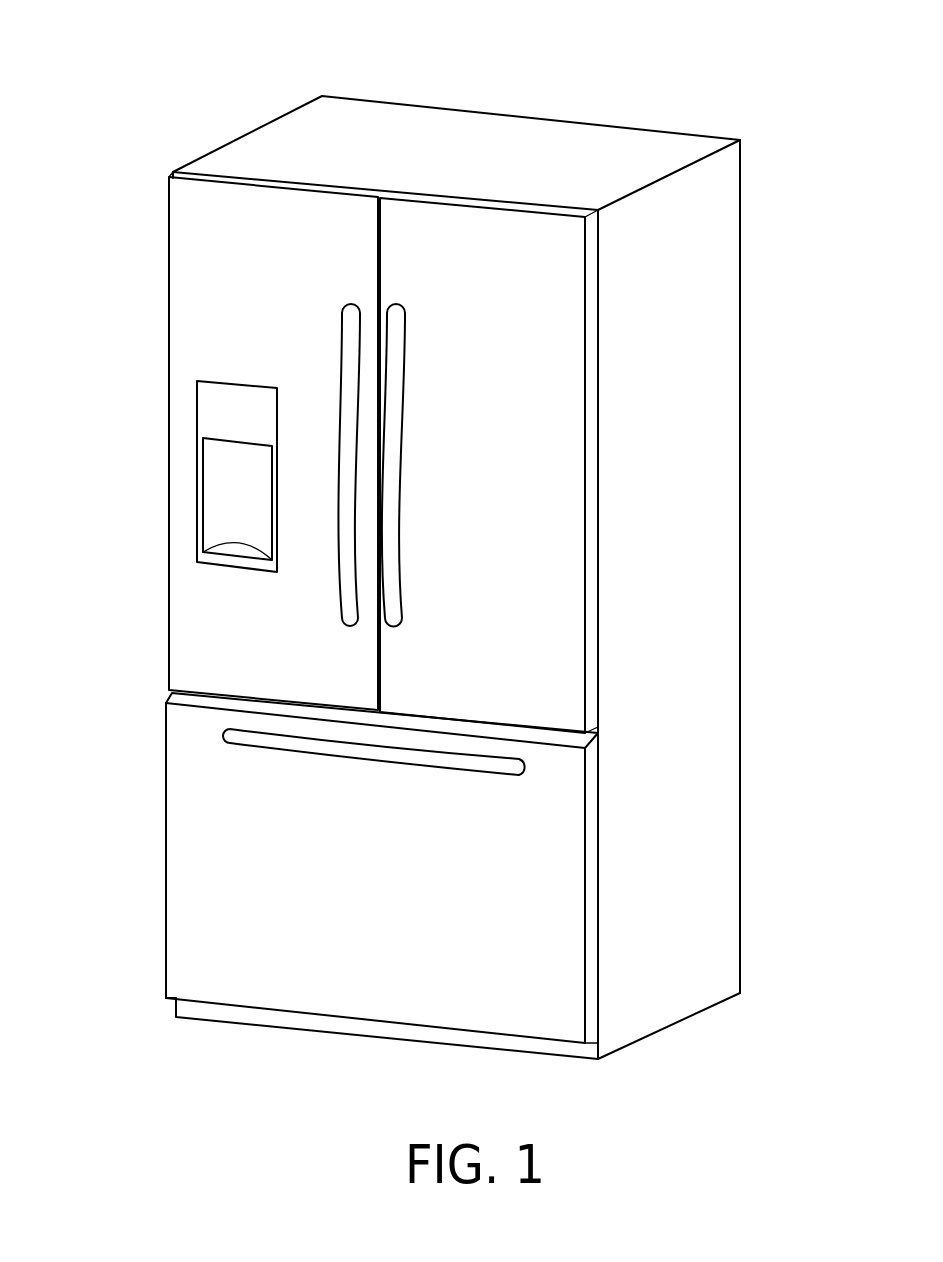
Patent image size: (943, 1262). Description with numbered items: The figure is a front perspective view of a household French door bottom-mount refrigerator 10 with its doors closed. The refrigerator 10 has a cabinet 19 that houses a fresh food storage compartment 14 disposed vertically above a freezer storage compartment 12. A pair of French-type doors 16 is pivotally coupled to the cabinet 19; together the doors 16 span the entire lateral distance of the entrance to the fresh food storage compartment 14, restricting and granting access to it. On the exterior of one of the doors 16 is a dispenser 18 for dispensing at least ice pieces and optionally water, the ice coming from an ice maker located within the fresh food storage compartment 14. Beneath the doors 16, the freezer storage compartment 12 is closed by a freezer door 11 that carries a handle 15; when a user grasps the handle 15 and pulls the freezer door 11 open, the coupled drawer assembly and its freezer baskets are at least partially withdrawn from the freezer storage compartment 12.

The refrigerator 10 is at (698, 88).
The freezer door 11 is at (550, 905).
The freezer storage compartment 12 is at (369, 868).
The fresh food storage compartment 14 is at (366, 452).
The handle 15 is at (337, 763).
The doors 16 is at (180, 288).
The dispenser 18 is at (218, 493).
The cabinet 19 is at (712, 277).